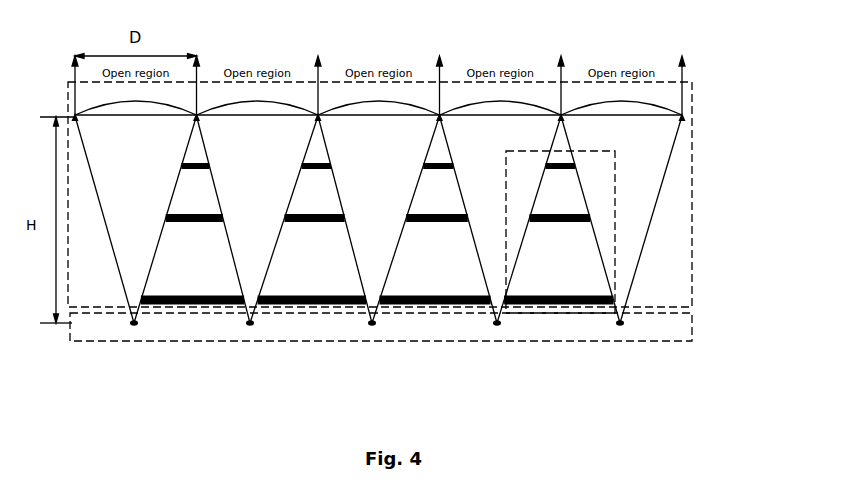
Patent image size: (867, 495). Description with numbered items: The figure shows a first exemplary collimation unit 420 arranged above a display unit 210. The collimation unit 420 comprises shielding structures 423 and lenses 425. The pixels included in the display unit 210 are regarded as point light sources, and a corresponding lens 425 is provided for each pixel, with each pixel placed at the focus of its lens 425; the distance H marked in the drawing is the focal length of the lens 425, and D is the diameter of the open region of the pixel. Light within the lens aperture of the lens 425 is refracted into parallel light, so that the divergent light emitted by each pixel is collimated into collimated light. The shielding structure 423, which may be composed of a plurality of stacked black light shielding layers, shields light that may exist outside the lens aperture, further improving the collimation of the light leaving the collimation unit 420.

The first exemplary collimation unit 420 is at (692, 82).
The lens 425 is at (662, 110).
The shielding structure 423 is at (593, 170).
The display unit 210 is at (648, 341).